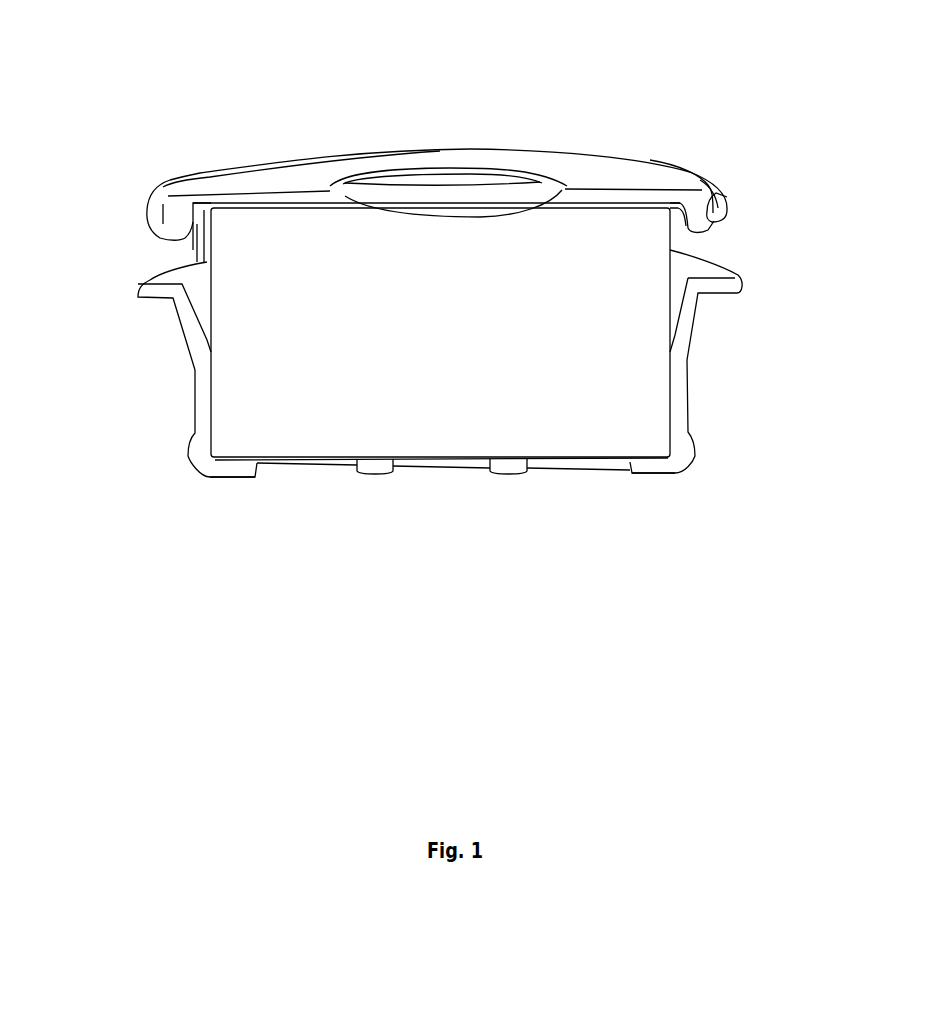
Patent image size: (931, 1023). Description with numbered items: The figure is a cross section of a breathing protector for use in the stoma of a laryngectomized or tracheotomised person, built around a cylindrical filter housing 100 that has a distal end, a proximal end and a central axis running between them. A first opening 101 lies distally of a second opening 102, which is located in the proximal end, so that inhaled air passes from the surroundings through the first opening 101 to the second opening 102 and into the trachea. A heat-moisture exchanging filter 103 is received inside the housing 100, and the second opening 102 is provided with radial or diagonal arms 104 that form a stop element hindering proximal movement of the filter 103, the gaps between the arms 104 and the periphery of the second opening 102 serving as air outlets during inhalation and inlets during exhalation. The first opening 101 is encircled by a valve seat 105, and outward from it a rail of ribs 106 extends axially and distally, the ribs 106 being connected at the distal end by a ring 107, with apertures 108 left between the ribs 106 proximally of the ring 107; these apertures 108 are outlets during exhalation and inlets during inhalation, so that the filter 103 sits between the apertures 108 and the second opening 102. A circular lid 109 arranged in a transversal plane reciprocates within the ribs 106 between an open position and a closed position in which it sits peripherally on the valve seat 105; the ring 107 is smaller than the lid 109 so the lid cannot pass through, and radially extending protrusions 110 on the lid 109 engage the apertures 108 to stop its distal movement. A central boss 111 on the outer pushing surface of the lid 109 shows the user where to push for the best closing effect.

The cylindrical filter housing 100 is at (688, 368).
The first opening 101 is at (675, 276).
The second opening 102 is at (417, 510).
The heat-moisture exchanging filter 103 is at (327, 343).
The radial or diagonal arms 104 is at (393, 480).
The valve seat 105 is at (165, 273).
The ribs 106 is at (205, 246).
The ring 107 is at (723, 186).
The apertures 108 is at (722, 242).
The circular lid 109 is at (275, 177).
The radially extending protrusions 110 is at (168, 232).
The central boss 111 is at (332, 187).